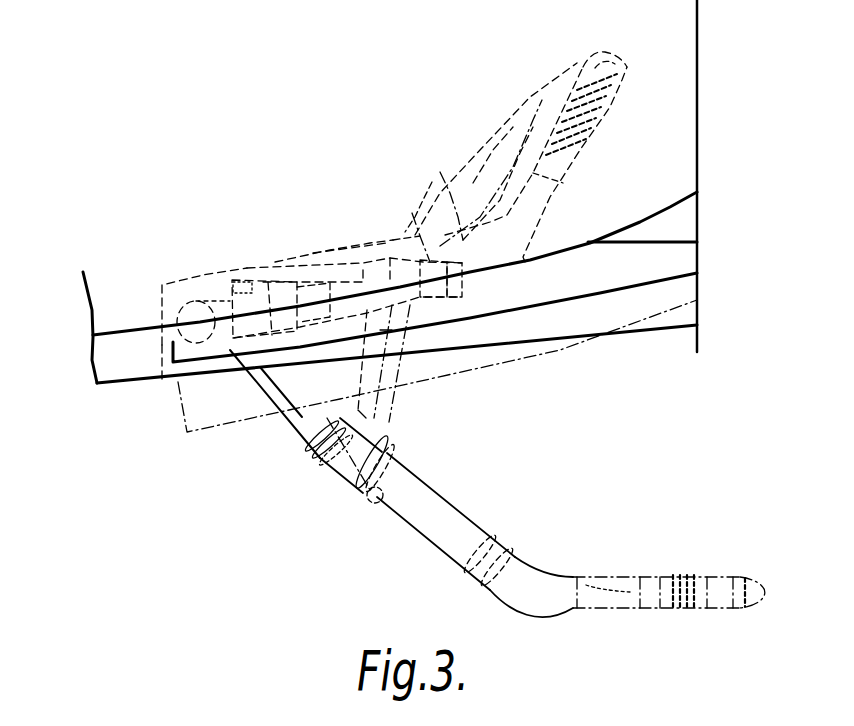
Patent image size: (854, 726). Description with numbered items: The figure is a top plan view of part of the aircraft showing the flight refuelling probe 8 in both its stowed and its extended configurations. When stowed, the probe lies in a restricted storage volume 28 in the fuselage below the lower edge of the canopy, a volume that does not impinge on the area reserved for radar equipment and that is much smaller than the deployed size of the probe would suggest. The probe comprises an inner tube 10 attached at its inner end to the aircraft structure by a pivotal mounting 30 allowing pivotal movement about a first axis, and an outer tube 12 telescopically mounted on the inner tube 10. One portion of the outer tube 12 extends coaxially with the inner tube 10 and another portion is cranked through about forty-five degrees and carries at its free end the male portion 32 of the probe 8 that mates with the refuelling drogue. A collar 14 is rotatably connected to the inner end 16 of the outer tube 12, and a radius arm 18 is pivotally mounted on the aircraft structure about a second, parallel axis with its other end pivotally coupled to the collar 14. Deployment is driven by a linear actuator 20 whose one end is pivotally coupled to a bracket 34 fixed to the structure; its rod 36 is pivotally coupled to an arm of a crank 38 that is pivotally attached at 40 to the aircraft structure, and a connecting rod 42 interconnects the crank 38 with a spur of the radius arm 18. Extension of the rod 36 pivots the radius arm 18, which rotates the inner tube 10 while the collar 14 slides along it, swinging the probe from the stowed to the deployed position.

The flight refuelling probe 8 is at (576, 577).
The inner tube 10 is at (275, 407).
The outer tube 12 is at (475, 535).
The collar 14 is at (228, 292).
The inner end of the outer tube 16 is at (343, 483).
The radius arm 18 is at (273, 260).
The linear actuator 20 is at (496, 154).
The storage volume 28 is at (712, 82).
The pivotal mounting 30 is at (150, 282).
The male portion 32 is at (712, 575).
The bracket 34 is at (536, 154).
The actuator rod 36 is at (434, 194).
The crank 38 is at (401, 241).
The pivotal attachment of the crank 40 is at (412, 213).
The connecting rod 42 is at (370, 238).